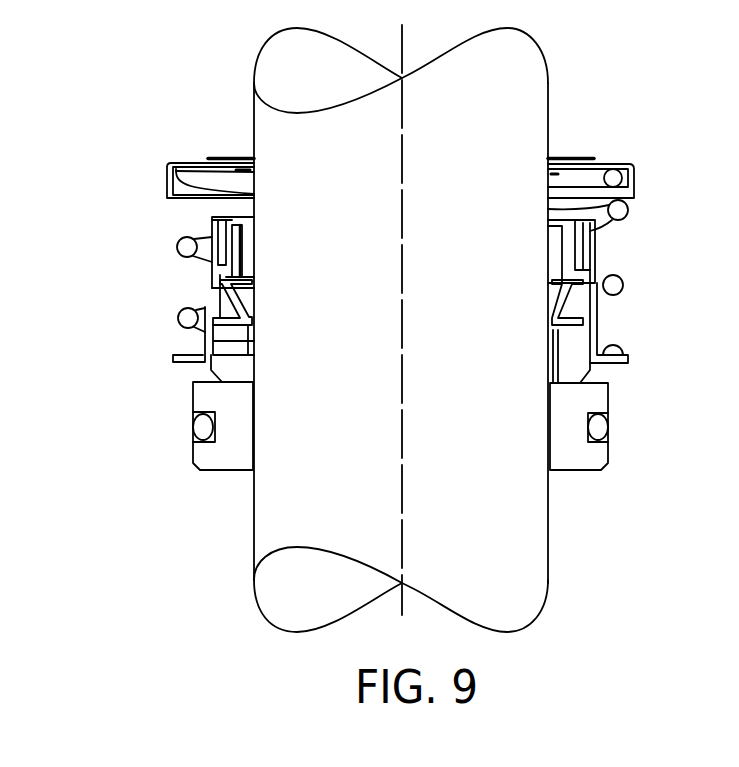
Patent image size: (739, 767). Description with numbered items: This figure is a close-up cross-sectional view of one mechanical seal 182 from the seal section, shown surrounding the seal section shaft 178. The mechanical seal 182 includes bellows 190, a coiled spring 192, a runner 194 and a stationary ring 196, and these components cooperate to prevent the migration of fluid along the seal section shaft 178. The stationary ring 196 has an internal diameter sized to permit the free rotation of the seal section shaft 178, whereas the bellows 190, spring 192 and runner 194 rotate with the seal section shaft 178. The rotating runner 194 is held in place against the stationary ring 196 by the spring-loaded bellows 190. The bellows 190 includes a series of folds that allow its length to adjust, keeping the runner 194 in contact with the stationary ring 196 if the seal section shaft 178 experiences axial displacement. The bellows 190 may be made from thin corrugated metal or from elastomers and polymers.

The seal section shaft 178 is at (528, 133).
The mechanical seal 182 is at (372, 291).
The bellows 190 is at (583, 337).
The coiled spring 192 is at (620, 210).
The runner 194 is at (577, 358).
The stationary ring 196 is at (607, 408).